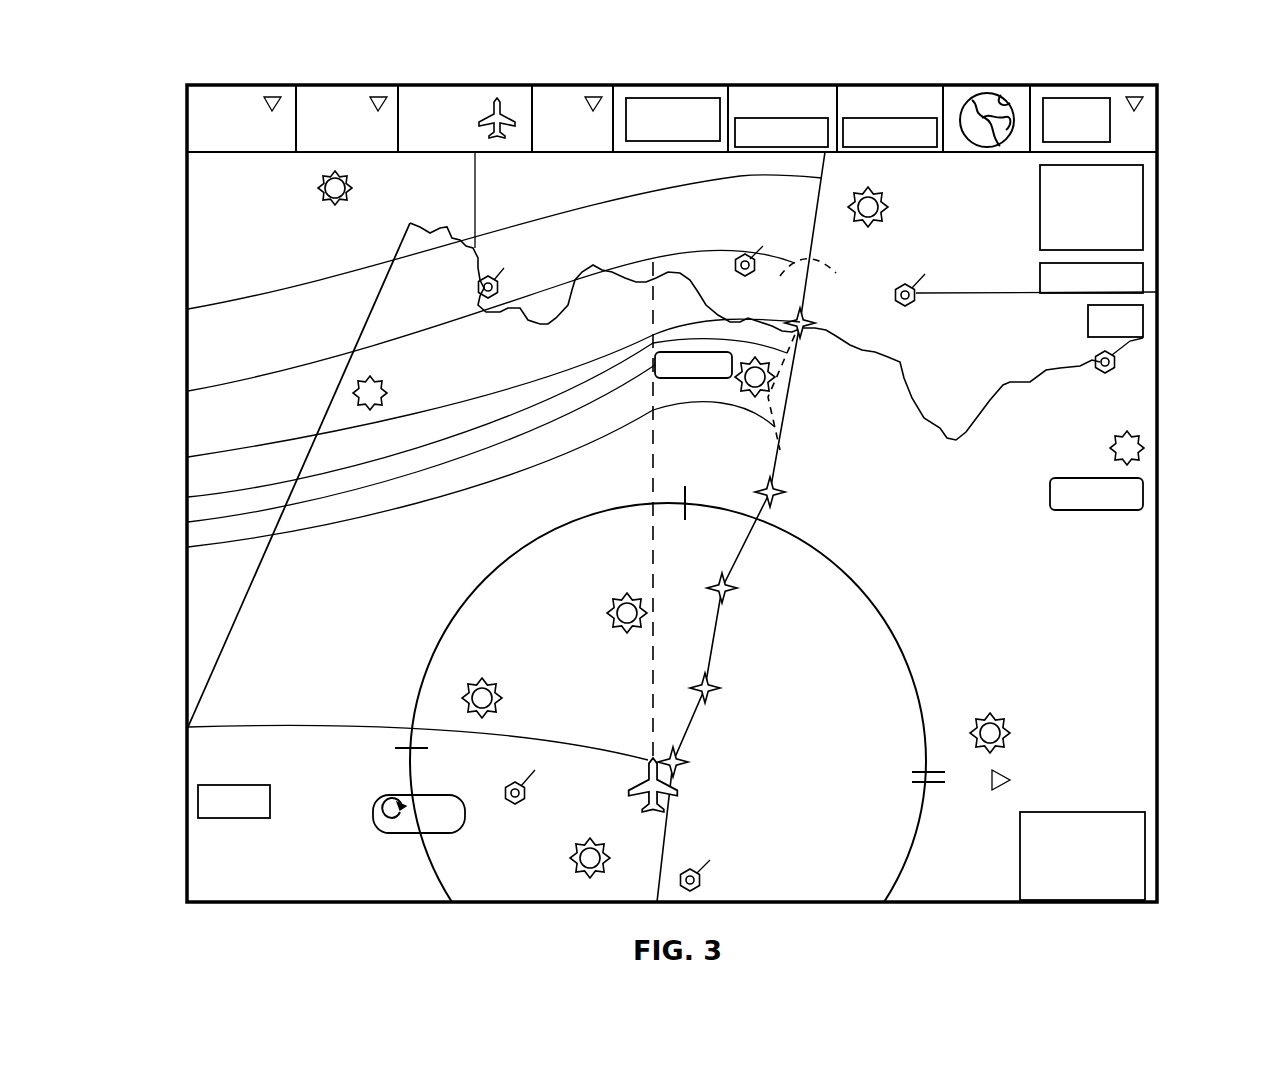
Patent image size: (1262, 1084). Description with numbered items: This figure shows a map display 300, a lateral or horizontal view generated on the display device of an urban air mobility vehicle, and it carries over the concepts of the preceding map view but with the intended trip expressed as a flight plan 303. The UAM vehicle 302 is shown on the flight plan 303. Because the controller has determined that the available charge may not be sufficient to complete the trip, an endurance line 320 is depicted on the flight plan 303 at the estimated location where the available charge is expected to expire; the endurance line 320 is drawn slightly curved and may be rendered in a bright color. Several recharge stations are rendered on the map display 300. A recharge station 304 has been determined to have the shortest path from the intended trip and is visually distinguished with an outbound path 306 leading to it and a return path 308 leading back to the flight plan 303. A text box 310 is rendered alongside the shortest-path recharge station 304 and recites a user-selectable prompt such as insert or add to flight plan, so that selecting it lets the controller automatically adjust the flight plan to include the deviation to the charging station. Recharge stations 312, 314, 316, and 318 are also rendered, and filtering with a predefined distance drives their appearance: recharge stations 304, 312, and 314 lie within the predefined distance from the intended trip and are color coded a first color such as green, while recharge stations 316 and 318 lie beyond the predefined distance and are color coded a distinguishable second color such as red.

The map display 300 is at (180, 74).
The UAM vehicle 302 is at (188, 727).
The flight plan 303 is at (188, 309).
The recharge station 304 is at (188, 497).
The outbound path 306 is at (188, 547).
The return path 308 is at (188, 457).
The text box 310 is at (188, 522).
The recharge station 312 is at (620, 597).
The recharge station 314 is at (574, 862).
The recharge station 316 is at (473, 685).
The recharge station 318 is at (1008, 725).
The endurance line 320 is at (188, 391).